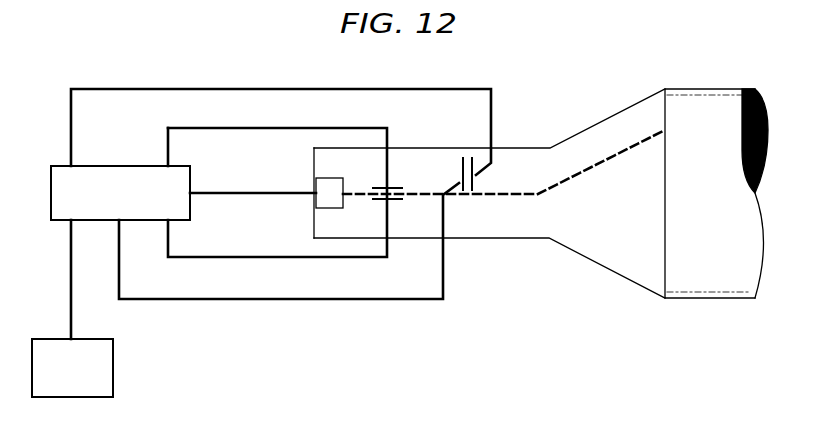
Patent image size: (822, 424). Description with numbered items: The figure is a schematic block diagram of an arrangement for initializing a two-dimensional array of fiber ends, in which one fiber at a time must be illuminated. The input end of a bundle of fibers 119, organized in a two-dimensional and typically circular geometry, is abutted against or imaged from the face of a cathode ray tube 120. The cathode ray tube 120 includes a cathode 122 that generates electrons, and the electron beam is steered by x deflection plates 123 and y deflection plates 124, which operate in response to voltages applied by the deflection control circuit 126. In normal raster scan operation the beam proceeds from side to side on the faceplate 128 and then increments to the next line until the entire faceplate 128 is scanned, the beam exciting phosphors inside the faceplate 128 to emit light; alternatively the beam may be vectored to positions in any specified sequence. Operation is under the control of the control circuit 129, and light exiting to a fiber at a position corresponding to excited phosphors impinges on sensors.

The bundle of fibers 119 is at (700, 89).
The cathode ray tube 120 is at (518, 239).
The cathode 122 is at (316, 186).
The x deflection plates 123 is at (461, 178).
The y deflection plates 124 is at (380, 200).
The deflection control circuit 126 is at (95, 165).
The faceplate 128 is at (665, 243).
The control circuit 129 is at (88, 339).